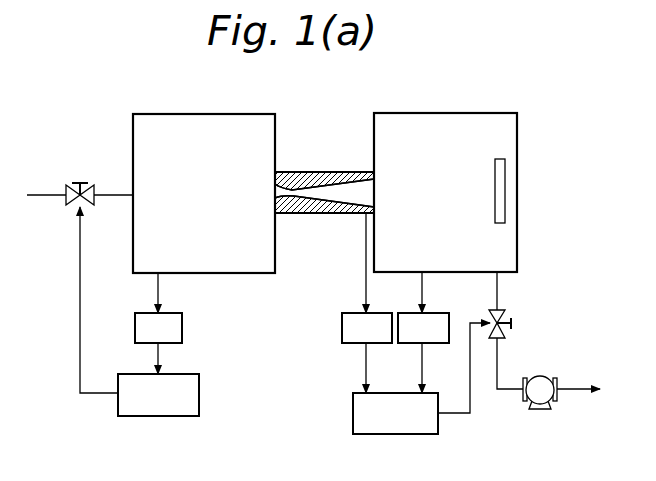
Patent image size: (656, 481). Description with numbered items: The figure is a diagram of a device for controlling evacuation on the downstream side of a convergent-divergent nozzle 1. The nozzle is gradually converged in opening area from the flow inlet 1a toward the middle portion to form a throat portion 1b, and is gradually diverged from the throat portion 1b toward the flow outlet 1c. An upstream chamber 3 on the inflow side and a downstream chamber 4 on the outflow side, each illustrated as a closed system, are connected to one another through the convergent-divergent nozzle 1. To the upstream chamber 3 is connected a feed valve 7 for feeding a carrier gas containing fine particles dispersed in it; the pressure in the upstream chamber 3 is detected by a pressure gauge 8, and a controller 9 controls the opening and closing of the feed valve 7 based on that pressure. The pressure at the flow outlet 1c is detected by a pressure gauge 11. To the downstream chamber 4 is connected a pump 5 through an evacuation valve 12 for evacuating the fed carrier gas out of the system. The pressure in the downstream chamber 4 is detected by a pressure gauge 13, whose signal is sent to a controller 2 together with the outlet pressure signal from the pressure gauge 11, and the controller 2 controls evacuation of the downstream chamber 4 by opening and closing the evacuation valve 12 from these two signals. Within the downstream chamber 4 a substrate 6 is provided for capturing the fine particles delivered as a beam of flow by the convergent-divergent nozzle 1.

The convergent-divergent nozzle 1 is at (338, 172).
The flow inlet 1a is at (272, 194).
The throat portion 1b is at (294, 178).
The flow outlet 1c is at (376, 192).
The controller 2 is at (353, 413).
The upstream chamber 3 is at (158, 113).
The downstream chamber 4 is at (489, 113).
The pump 5 is at (541, 377).
The substrate 6 is at (505, 176).
The feed valve 7 is at (87, 184).
The pressure gauge 8 is at (182, 322).
The controller 9 is at (199, 384).
The pressure gauge 11 is at (342, 325).
The evacuation valve 12 is at (503, 313).
The pressure gauge 13 is at (439, 313).